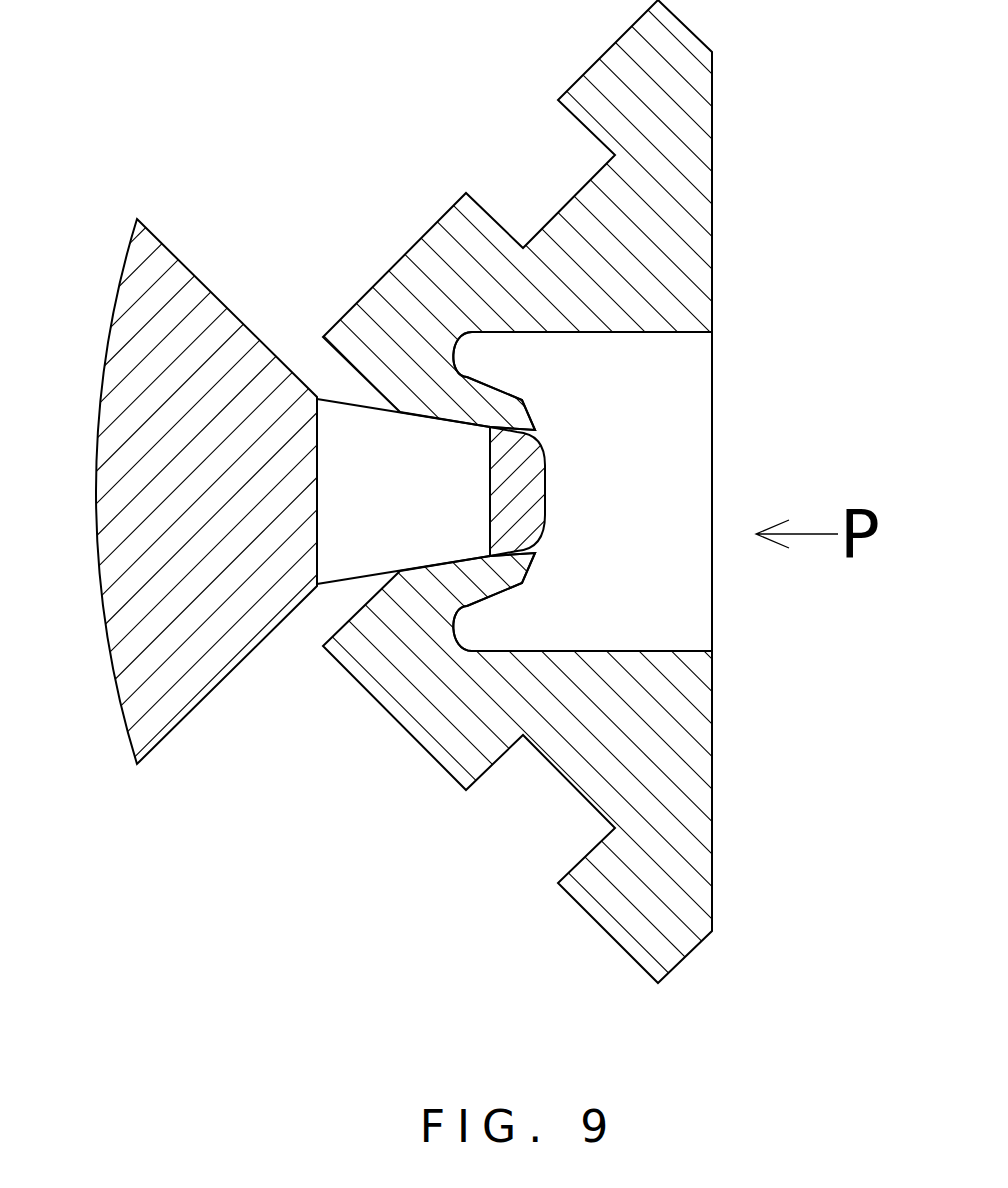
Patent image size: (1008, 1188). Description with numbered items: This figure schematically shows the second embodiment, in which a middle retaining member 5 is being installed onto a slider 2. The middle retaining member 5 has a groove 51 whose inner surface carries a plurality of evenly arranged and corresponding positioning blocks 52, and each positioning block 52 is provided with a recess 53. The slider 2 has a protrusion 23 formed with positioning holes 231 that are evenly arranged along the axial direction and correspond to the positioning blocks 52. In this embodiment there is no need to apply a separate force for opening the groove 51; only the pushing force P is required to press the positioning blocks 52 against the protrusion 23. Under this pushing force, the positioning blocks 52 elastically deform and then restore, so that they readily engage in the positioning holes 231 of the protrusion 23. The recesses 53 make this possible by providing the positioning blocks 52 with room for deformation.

The slider 2 is at (336, 536).
The positioning holes 231 is at (385, 504).
The protrusion 23 is at (527, 498).
The middle retaining member 5 is at (692, 143).
The groove 51 is at (602, 442).
The positioning blocks 52 is at (503, 410).
The recess 53 is at (481, 353).